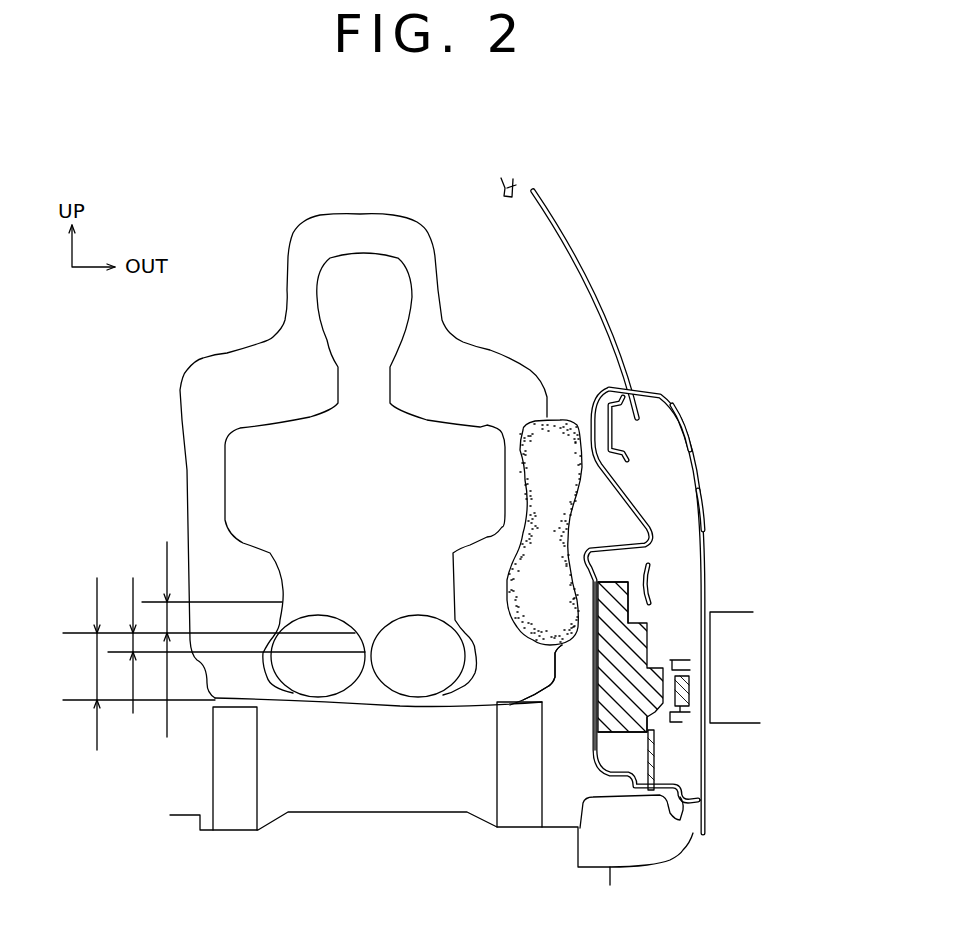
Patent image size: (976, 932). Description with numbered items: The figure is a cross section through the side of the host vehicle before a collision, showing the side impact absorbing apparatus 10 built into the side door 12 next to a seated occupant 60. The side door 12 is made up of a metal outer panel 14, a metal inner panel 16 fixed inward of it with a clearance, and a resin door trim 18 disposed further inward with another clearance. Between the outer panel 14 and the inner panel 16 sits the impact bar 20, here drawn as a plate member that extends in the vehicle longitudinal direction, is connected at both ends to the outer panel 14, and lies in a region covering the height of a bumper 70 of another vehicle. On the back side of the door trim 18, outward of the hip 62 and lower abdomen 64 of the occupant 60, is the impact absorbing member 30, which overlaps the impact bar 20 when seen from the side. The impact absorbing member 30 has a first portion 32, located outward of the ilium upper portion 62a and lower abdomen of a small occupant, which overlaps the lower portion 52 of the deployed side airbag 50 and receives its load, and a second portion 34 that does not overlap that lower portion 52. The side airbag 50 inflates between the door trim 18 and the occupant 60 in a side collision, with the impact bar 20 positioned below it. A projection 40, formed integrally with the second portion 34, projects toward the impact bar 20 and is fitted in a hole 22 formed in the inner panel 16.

The side impact absorbing apparatus 10 is at (693, 425).
The side door 12 is at (695, 453).
The outer panel 14 is at (702, 490).
The inner panel 16 is at (655, 755).
The door trim 18 is at (655, 782).
The impact bar 20 is at (687, 662).
The hole 22 is at (647, 615).
The impact absorbing member 30 is at (607, 698).
The first portion 32 is at (612, 593).
The second portion 34 is at (613, 715).
The projection 40 is at (660, 733).
The side airbag 50 is at (557, 448).
The lower portion 52 is at (533, 620).
The occupant 60 is at (187, 425).
The hip 62 is at (97, 670).
The ilium upper portion 62a is at (133, 641).
The lower abdomen 64 is at (165, 619).
The bumper 70 is at (740, 610).